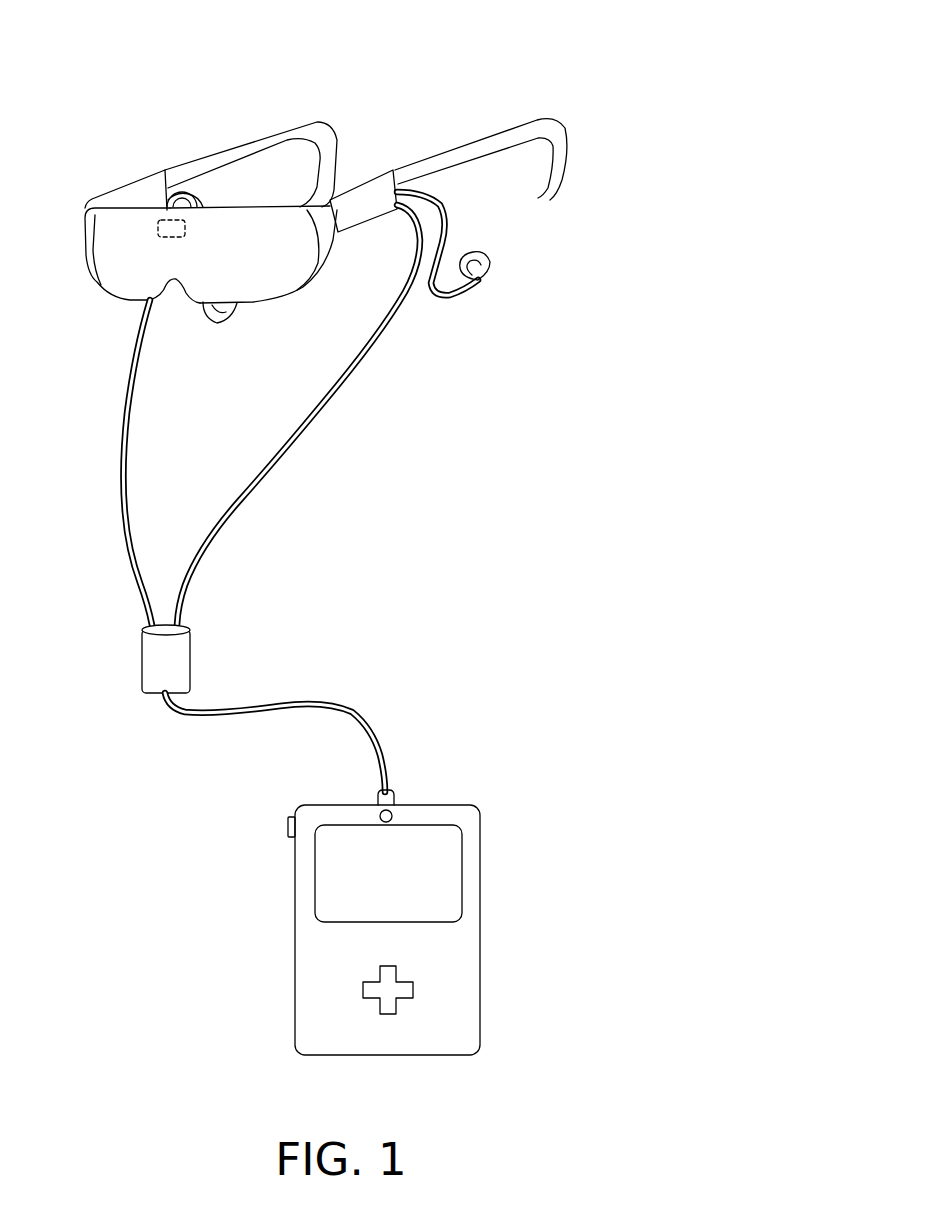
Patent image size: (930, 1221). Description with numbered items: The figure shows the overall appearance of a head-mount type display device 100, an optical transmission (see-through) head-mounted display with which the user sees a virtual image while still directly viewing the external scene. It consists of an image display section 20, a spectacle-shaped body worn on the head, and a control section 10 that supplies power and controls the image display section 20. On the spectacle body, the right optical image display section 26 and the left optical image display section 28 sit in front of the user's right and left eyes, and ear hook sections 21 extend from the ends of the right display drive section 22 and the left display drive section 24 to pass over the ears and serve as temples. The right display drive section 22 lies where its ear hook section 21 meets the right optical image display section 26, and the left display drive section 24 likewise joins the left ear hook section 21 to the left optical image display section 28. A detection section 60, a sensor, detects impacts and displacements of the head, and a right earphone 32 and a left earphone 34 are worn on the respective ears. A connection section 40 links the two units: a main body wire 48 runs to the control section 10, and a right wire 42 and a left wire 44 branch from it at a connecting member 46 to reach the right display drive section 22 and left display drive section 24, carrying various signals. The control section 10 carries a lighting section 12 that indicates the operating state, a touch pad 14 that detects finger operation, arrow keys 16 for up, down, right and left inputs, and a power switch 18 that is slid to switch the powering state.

The head-mount type display device 100 is at (630, 111).
The image display section 20 is at (393, 117).
The ear hook sections 21 is at (287, 122).
The right display drive section 22 is at (123, 183).
The left display drive section 24 is at (360, 177).
The right optical image display section 26 is at (113, 273).
The left optical image display section 28 is at (277, 273).
The right earphone 32 is at (223, 323).
The left earphone 34 is at (493, 277).
The detection section 60 is at (173, 217).
The connection section 40 is at (218, 592).
The right wire 42 is at (130, 427).
The left wire 44 is at (320, 413).
The connecting member 46 is at (190, 660).
The main body wire 48 is at (317, 690).
The control section 10 is at (497, 791).
The lighting section 12 is at (393, 817).
The touch pad 14 is at (463, 877).
The arrow keys 16 is at (413, 990).
The power switch 18 is at (287, 825).